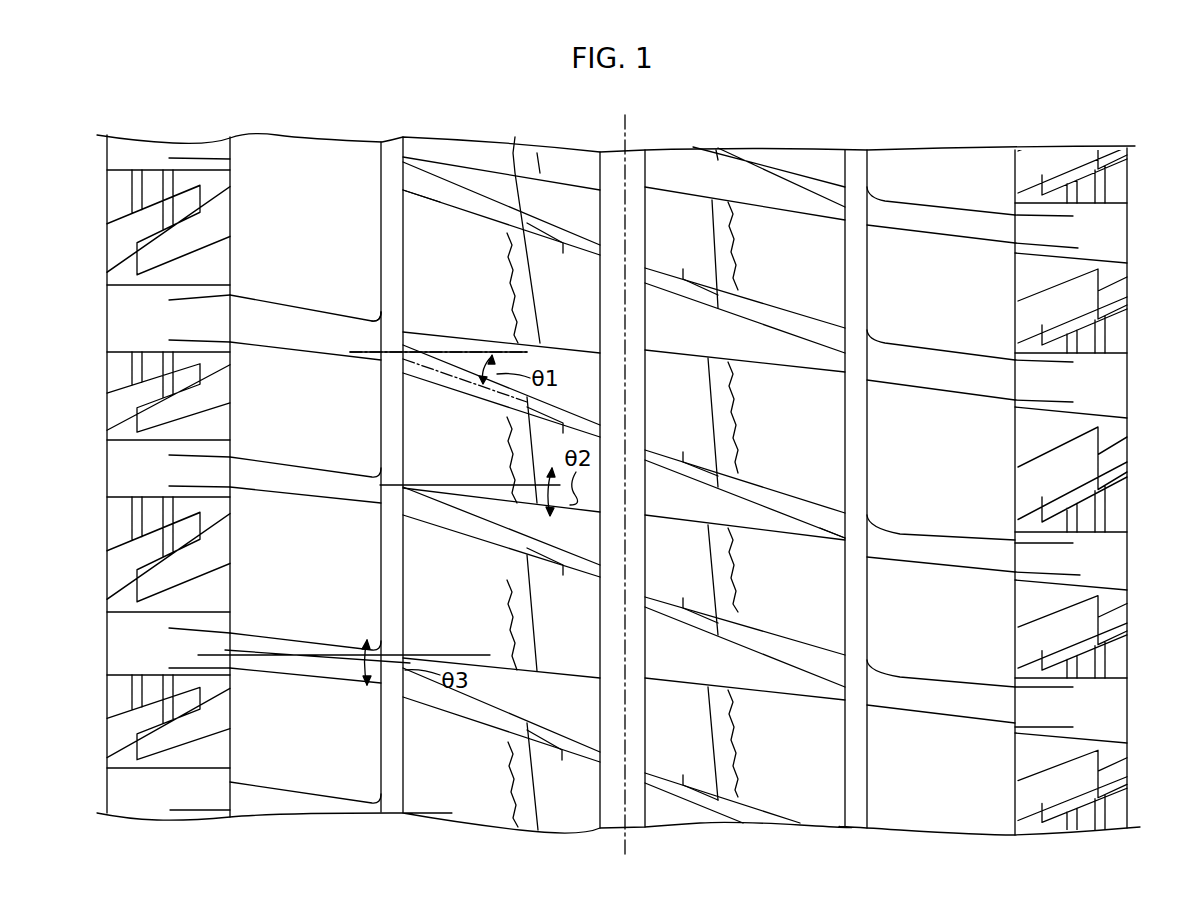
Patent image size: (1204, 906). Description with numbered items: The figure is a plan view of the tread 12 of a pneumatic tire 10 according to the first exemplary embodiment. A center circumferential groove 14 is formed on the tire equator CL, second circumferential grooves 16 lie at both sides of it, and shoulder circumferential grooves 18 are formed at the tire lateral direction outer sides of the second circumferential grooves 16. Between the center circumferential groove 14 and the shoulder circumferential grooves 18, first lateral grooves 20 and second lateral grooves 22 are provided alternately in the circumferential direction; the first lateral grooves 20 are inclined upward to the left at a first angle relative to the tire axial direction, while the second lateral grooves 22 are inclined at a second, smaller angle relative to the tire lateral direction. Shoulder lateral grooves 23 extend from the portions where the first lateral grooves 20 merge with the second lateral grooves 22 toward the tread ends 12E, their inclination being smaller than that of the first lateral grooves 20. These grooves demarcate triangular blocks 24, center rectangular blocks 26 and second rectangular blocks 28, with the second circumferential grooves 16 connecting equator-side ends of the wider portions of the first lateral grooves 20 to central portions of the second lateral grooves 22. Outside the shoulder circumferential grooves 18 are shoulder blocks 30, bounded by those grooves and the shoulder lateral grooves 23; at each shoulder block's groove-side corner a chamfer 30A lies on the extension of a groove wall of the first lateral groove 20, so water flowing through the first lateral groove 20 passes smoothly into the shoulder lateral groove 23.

The pneumatic tire 10 is at (748, 130).
The tread 12 is at (466, 143).
The tread end 12E is at (229, 798).
The center circumferential groove 14 is at (636, 155).
The second circumferential groove 16 is at (511, 152).
The shoulder circumferential groove 18 is at (393, 140).
The first lateral groove 20 is at (662, 282).
The second lateral groove 22 is at (575, 355).
The shoulder lateral groove 23 is at (257, 327).
The triangular block 24 is at (570, 195).
The center rectangular block 26 is at (557, 297).
The second rectangular block 28 is at (413, 217).
The shoulder block 30 is at (288, 290).
The chamfer 30A is at (882, 553).
The tire equator CL is at (625, 472).